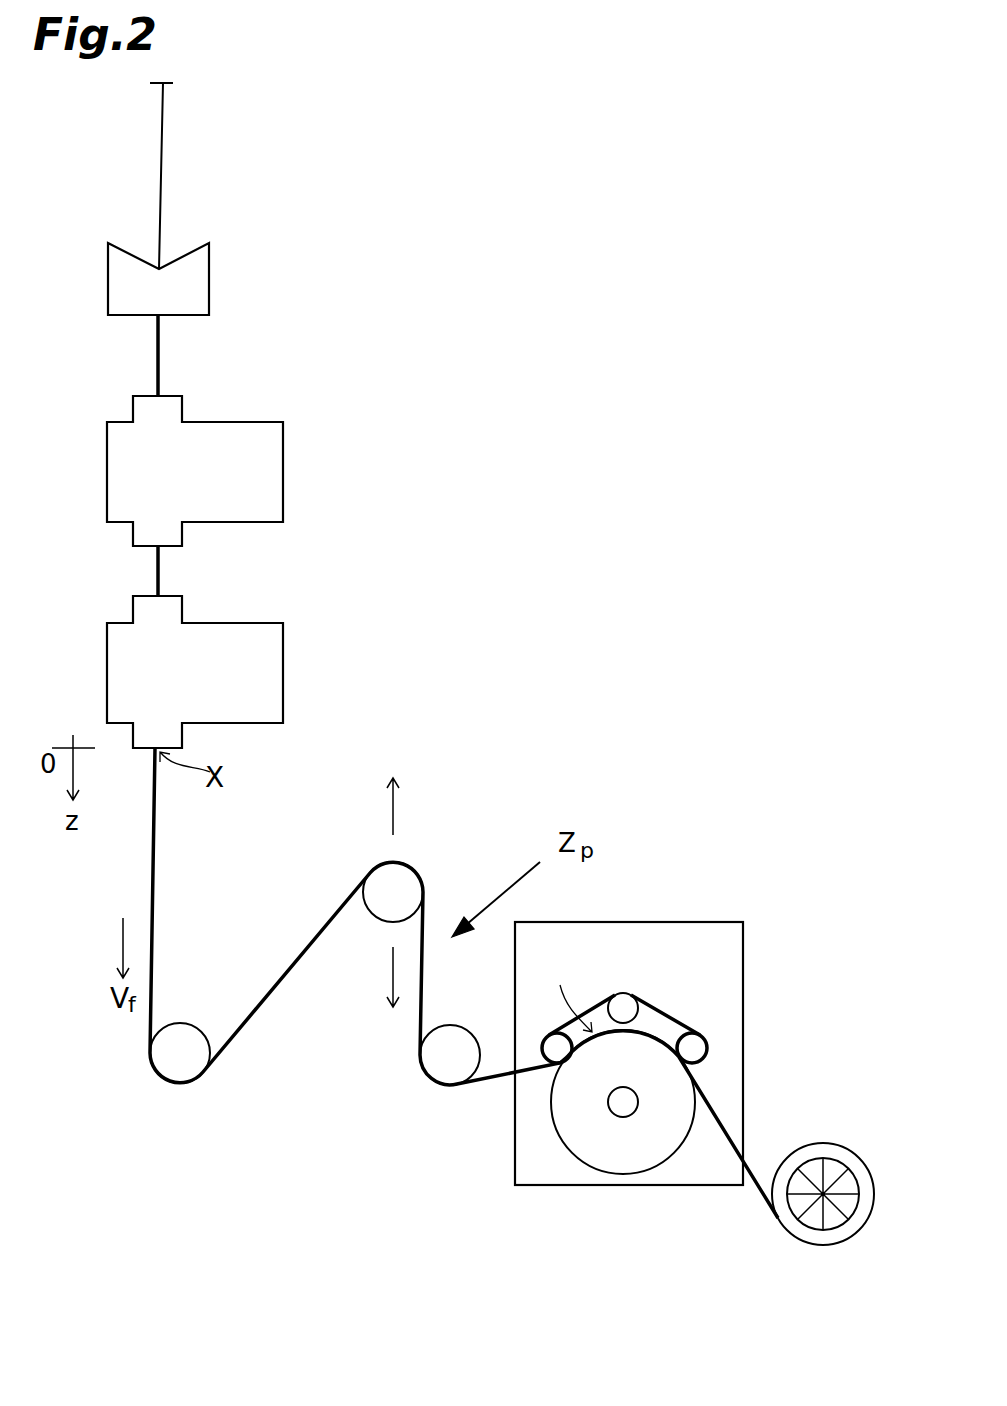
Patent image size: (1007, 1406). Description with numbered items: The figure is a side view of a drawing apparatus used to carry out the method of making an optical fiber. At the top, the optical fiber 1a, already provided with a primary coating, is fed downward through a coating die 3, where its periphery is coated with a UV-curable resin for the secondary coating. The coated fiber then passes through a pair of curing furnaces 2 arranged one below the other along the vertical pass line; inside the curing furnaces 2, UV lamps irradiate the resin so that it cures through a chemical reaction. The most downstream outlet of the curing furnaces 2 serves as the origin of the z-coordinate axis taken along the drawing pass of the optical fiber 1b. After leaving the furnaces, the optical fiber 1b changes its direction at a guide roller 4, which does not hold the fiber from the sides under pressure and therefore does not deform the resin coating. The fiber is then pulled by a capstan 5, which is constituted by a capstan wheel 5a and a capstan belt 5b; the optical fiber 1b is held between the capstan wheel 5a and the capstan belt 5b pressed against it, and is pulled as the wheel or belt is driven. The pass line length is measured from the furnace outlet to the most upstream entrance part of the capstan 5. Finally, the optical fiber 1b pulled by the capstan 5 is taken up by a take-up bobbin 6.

The optical fiber 1a is at (162, 152).
The optical fiber 1b is at (155, 805).
The curing furnaces 2 is at (283, 475).
The coating die 3 is at (209, 282).
The guide roller 4 is at (160, 1070).
The capstan 5 is at (648, 1079).
The capstan wheel 5a is at (595, 1162).
The capstan belt 5b is at (673, 1017).
The take-up bobbin 6 is at (782, 1227).